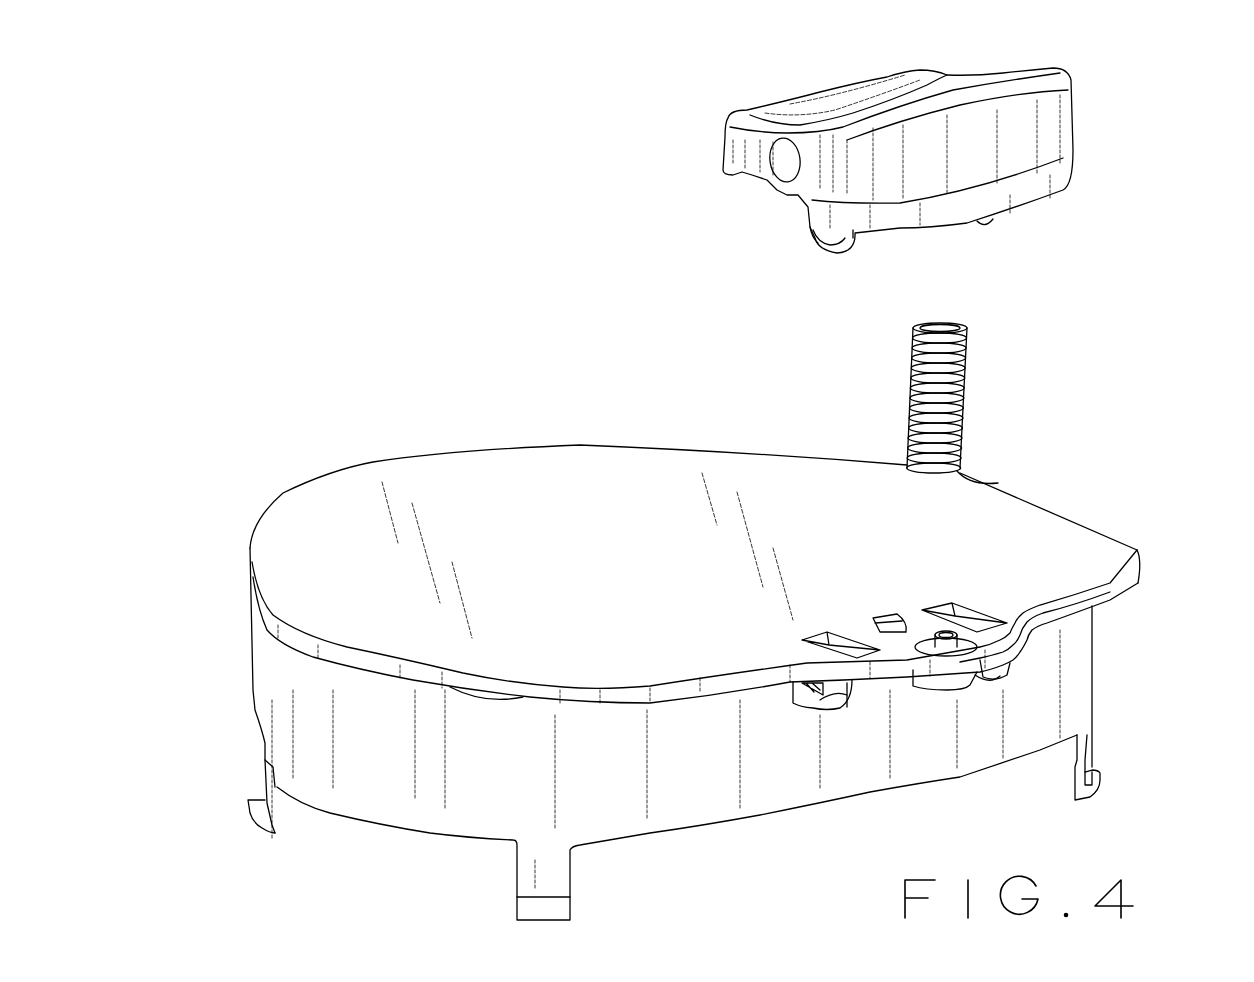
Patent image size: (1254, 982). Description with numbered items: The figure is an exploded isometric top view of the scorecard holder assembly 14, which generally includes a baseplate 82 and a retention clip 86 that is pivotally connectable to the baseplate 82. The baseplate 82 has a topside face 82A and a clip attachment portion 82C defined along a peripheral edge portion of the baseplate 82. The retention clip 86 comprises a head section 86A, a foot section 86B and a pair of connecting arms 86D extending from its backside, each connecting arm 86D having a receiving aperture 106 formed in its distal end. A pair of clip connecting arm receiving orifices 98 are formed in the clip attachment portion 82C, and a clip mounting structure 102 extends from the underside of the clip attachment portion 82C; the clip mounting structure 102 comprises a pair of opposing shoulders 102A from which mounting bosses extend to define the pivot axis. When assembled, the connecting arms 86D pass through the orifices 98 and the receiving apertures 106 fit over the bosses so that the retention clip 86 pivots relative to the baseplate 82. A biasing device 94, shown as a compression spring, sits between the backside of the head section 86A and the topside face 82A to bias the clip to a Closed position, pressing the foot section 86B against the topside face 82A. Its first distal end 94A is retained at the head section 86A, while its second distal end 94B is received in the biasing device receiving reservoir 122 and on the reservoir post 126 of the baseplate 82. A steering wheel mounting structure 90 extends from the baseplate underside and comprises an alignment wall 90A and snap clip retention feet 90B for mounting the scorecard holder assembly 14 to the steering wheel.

The scorecard holder assembly 14 is at (360, 292).
The retention clip 86 is at (973, 62).
The head section 86A is at (1043, 130).
The foot section 86B is at (800, 110).
The connecting arms 86D is at (975, 225).
The receiving aperture 106 is at (817, 240).
The biasing device 94 is at (965, 392).
The first distal end 94A is at (950, 322).
The second distal end 94B is at (992, 482).
The steering wheel mounting structure 90 is at (234, 688).
The baseplate 82 is at (682, 557).
The topside face 82A is at (1067, 540).
The clip attachment portion 82C is at (890, 643).
The alignment wall 90A is at (488, 800).
The snap clip retention feet 90B is at (1090, 754).
The clip connecting arm receiving orifices 98 is at (850, 634).
The biasing device receiving reservoir post 126 is at (942, 630).
The biasing device receiving reservoir 122 is at (1095, 610).
The clip mounting structure 102 is at (850, 723).
The shoulders 102A is at (1003, 667).